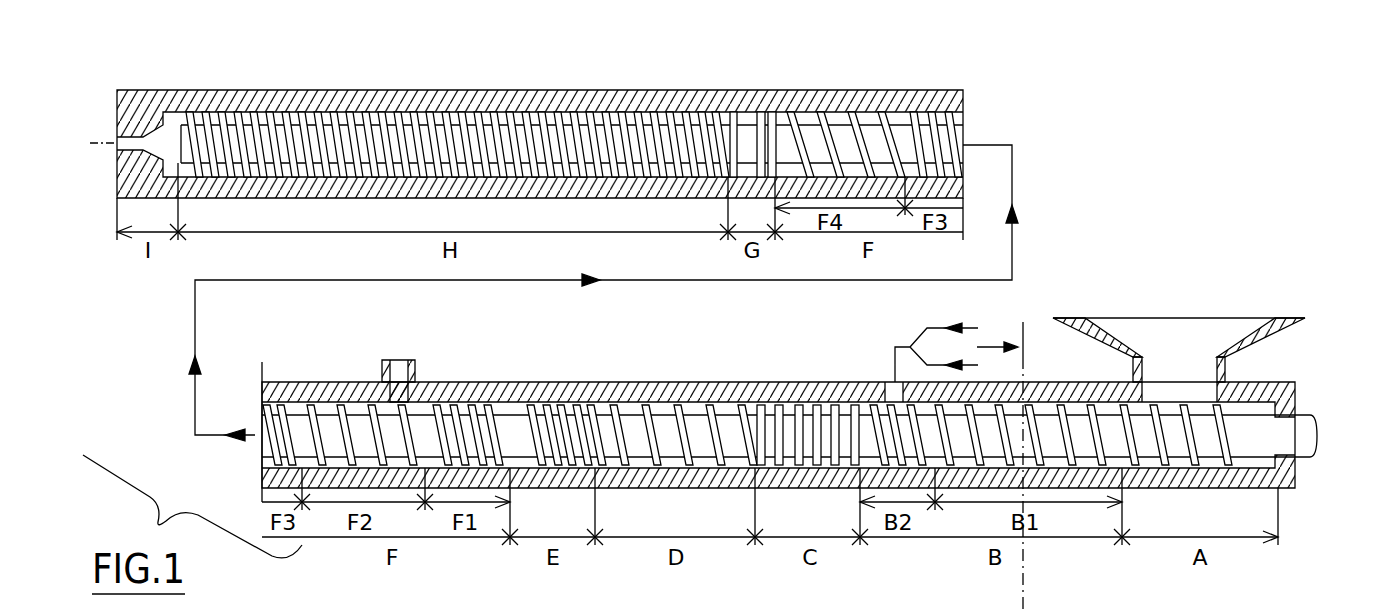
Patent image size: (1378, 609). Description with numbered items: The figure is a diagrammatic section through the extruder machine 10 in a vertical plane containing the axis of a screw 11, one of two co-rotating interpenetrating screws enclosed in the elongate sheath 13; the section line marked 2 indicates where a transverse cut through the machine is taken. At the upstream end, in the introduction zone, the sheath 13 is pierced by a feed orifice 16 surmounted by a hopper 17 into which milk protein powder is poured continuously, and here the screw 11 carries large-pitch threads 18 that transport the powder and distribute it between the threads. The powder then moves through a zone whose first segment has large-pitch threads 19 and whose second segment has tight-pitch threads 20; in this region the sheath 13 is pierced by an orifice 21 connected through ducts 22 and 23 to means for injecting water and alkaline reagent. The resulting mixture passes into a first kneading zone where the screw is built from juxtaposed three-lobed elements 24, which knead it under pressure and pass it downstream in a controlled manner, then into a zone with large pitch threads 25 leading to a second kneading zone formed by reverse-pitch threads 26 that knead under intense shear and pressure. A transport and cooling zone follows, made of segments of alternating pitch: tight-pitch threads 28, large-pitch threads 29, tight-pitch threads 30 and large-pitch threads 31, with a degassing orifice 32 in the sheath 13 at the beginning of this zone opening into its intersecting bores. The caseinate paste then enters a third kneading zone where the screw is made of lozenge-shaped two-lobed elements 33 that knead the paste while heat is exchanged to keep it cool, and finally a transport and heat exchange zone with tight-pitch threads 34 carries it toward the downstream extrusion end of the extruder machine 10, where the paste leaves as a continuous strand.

The extruder machine 10 is at (1106, 169).
The screw 11 is at (318, 108).
The sheath 13 is at (535, 90).
The feed orifice 16 is at (1165, 385).
The hopper 17 is at (1265, 330).
The large-pitch threads 18 is at (1195, 469).
The large-pitch threads 19 is at (1050, 408).
The tight-pitch threads 20 is at (868, 400).
The orifice 21 is at (890, 383).
The duct 22 is at (977, 327).
The duct 23 is at (978, 364).
The three-lobed elements 24 is at (818, 410).
The large pitch threads 25 is at (617, 420).
The reverse-pitch threads 26 is at (555, 410).
The tight-pitch threads 28 is at (495, 400).
The large-pitch threads 29 is at (313, 405).
The tight-pitch threads 30 is at (925, 112).
The large-pitch threads 31 is at (843, 115).
The degassing orifice 32 is at (400, 375).
The two-lobed elements 33 is at (752, 118).
The tight-pitch threads 34 is at (408, 115).
The section line 2- 2 is at (1000, 457).